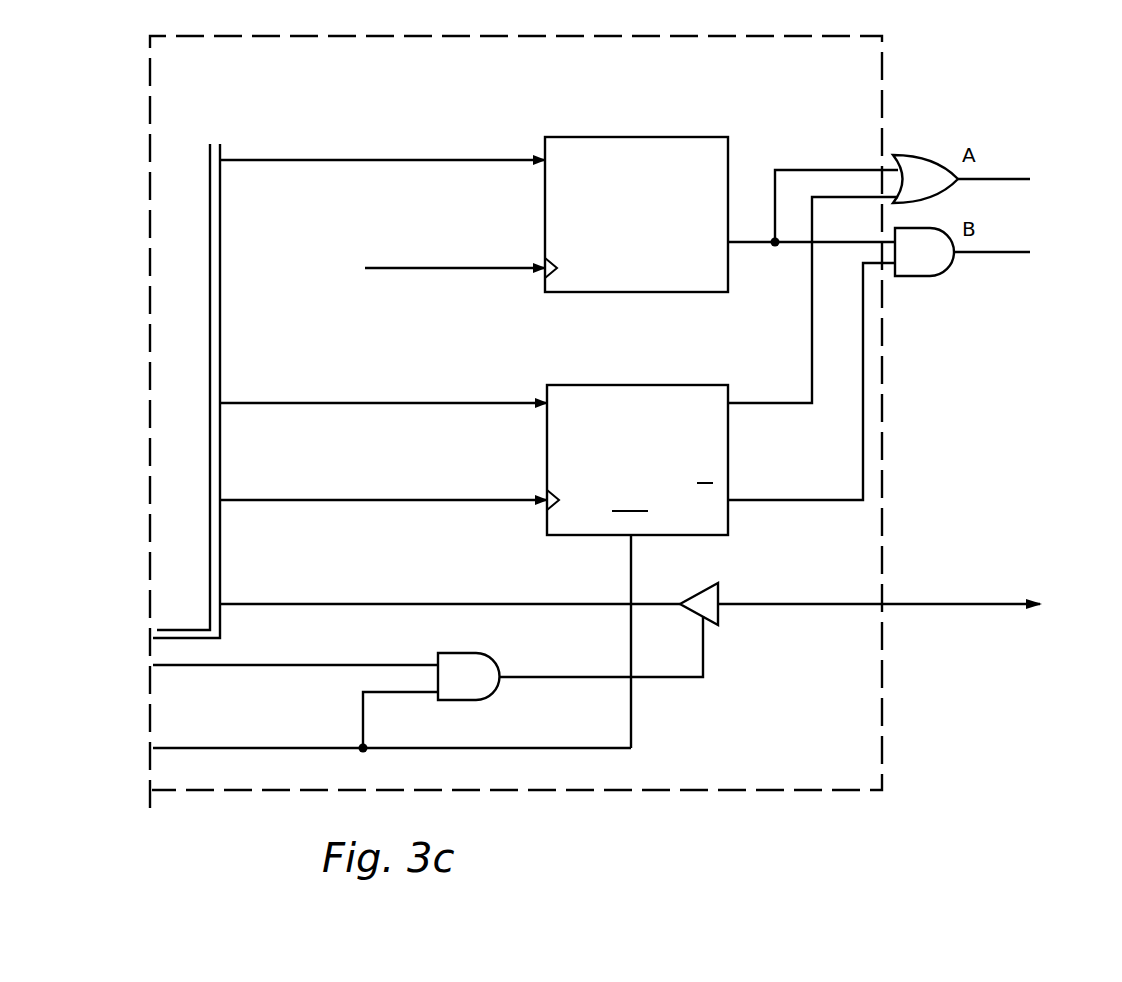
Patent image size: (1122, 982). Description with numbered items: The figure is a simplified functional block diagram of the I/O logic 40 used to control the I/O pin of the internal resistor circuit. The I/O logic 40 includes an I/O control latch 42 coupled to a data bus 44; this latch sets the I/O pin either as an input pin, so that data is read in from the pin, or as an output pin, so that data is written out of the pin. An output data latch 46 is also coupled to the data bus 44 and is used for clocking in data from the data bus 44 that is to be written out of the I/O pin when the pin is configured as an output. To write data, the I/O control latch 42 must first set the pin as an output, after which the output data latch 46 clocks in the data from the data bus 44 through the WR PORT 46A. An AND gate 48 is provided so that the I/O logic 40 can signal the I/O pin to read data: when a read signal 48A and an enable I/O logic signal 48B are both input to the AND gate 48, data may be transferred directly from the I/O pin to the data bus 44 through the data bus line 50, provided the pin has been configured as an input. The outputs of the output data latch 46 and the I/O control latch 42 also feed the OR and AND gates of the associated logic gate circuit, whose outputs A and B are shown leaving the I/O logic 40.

The I/O logic 40 is at (808, 36).
The data bus 44 is at (208, 160).
The output data latch 46 is at (545, 148).
The WR PORT 46A is at (545, 266).
The I/O control latch 42 is at (576, 392).
The data bus line 50 is at (293, 604).
The AND gate 48 is at (465, 700).
The read signal 48A is at (400, 665).
The enable I/O logic signal 48B is at (318, 748).